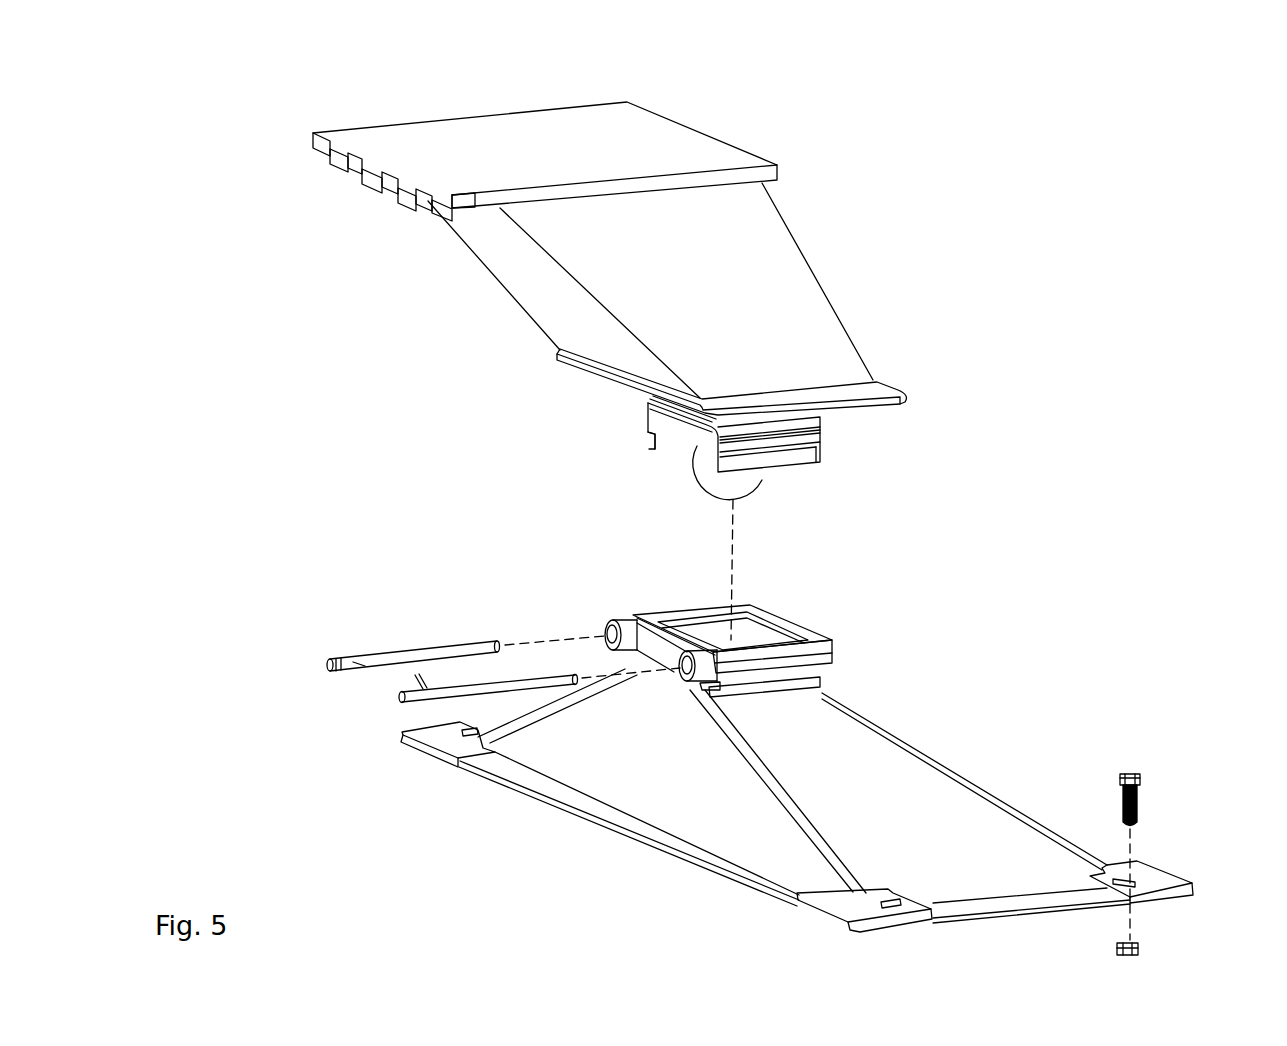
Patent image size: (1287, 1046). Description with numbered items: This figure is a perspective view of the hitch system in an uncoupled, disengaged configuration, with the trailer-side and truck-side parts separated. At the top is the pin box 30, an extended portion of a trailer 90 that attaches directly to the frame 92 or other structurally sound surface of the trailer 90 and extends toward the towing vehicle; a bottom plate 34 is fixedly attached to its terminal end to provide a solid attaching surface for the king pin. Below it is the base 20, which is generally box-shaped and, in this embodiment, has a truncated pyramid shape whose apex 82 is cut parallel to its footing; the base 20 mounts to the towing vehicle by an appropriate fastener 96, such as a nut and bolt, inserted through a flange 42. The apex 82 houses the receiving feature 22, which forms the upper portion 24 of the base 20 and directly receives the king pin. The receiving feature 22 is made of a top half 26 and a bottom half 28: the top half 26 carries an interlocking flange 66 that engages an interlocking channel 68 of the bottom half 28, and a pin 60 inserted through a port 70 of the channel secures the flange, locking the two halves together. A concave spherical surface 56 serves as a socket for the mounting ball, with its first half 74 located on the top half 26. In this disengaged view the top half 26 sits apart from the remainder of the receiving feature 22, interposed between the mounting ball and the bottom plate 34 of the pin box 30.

The base 20 is at (803, 794).
The receiving feature 22 is at (754, 405).
The upper portion 24 is at (908, 473).
The top half 26 is at (921, 417).
The bottom half 28 is at (791, 602).
The pin box 30 is at (749, 290).
The bottom plate 34 is at (813, 371).
The flange 42 is at (629, 835).
The spherical surface 56 is at (610, 578).
The pin 60 is at (381, 618).
The interlocking flange 66 is at (754, 440).
The interlocking channel 68 is at (766, 598).
The port 70 is at (539, 630).
The first half 74 is at (549, 407).
The apex 82 is at (940, 646).
The trailer 90 is at (568, 140).
The frame 92 is at (545, 127).
The fastener 96 is at (1175, 833).